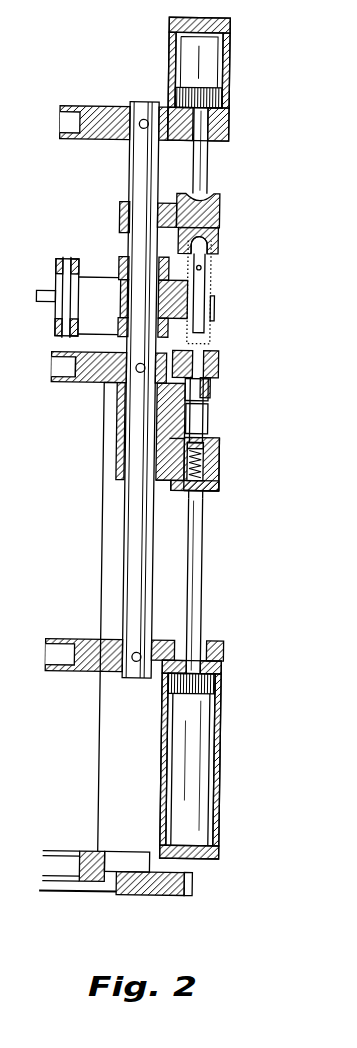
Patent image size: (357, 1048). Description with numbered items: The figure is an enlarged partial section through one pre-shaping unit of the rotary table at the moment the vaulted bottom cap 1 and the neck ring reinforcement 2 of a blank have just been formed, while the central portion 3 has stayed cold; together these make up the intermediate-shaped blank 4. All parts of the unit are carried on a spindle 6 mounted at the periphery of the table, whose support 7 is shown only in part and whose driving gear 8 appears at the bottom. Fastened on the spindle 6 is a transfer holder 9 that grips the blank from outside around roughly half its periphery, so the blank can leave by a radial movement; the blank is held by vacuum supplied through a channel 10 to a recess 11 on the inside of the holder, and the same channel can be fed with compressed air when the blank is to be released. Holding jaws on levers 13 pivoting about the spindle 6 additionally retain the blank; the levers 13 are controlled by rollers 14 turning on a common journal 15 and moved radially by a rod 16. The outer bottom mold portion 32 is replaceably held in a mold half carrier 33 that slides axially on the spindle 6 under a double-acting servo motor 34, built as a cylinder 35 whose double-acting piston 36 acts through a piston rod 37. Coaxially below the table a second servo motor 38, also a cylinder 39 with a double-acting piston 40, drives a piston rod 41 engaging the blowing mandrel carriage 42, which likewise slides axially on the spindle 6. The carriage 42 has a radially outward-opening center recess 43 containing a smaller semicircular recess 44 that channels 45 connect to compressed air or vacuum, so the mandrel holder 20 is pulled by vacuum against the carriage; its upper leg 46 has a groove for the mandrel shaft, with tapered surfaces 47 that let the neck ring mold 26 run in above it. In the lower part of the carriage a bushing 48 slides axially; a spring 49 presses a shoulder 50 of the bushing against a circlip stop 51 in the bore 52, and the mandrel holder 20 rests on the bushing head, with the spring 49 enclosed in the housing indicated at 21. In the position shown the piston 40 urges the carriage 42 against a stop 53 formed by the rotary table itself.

The vaulted bottom cap 1 is at (206, 242).
The neck ring reinforcement 2 is at (207, 352).
The central portion 3 is at (205, 270).
The intermediate-shaped blank 4 is at (211, 335).
The spindle 6 is at (135, 578).
The support 7 is at (58, 125).
The gear 8 is at (204, 882).
The transfer holder 9 is at (119, 297).
The channel 10 is at (187, 295).
The recess 11 is at (211, 306).
The lever 13 is at (115, 260).
The roller 14 is at (54, 274).
The journal 15 is at (64, 310).
The rod 16 is at (35, 297).
The mandrel holder 20 is at (220, 455).
The spring 21 is at (206, 466).
The neck ring mold 26 is at (216, 372).
The outer bottom mold portion 32 is at (211, 233).
The mold half carrier 33 is at (217, 205).
The double-acting servo motor 34 is at (162, 67).
The cylinder 35 is at (163, 45).
The double-acting piston 36 is at (214, 97).
The piston rod 37 is at (204, 168).
The servo motor 38 is at (227, 732).
The cylinder 39 is at (218, 778).
The double-acting piston 40 is at (224, 683).
The piston rod 41 is at (205, 602).
The blowing mandrel carriage 42 is at (181, 491).
The center recess 43 is at (207, 390).
The recess 44 is at (208, 408).
The channels 45 is at (208, 424).
The upper leg 46 is at (186, 394).
The tapered surfaces 47 is at (182, 382).
The bushing 48 is at (213, 492).
The spring 49 is at (180, 470).
The shoulder 50 is at (219, 478).
The stop 51 is at (172, 440).
The bore 52 is at (212, 491).
The stop 53 is at (101, 371).